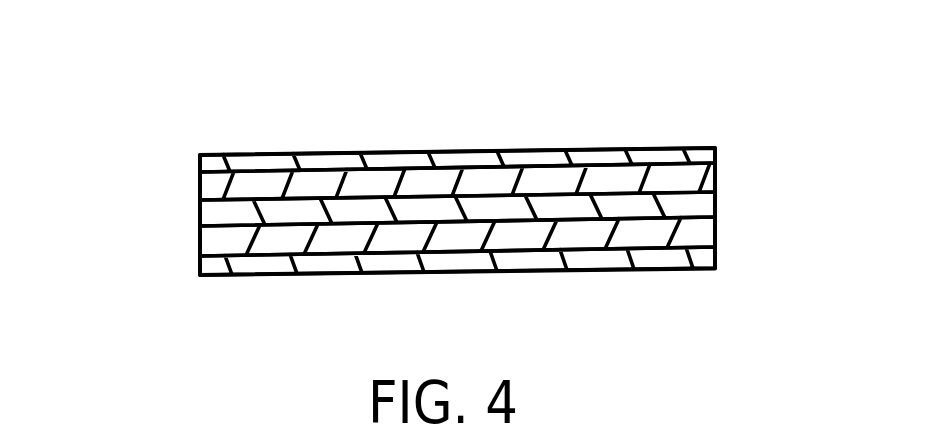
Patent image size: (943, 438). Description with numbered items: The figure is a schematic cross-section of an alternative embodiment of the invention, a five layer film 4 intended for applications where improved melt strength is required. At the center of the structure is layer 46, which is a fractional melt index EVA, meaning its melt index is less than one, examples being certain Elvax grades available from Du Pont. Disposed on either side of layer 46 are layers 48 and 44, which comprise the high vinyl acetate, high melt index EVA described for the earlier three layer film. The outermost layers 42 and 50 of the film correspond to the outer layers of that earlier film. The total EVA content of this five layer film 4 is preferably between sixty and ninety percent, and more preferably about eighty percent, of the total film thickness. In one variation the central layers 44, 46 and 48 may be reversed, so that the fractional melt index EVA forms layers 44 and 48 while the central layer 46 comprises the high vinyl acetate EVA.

The five layer film 4 is at (659, 102).
The layer 42 is at (198, 270).
The layer 44 is at (717, 237).
The layer 46 is at (198, 216).
The layer 48 is at (717, 185).
The layer 50 is at (200, 165).